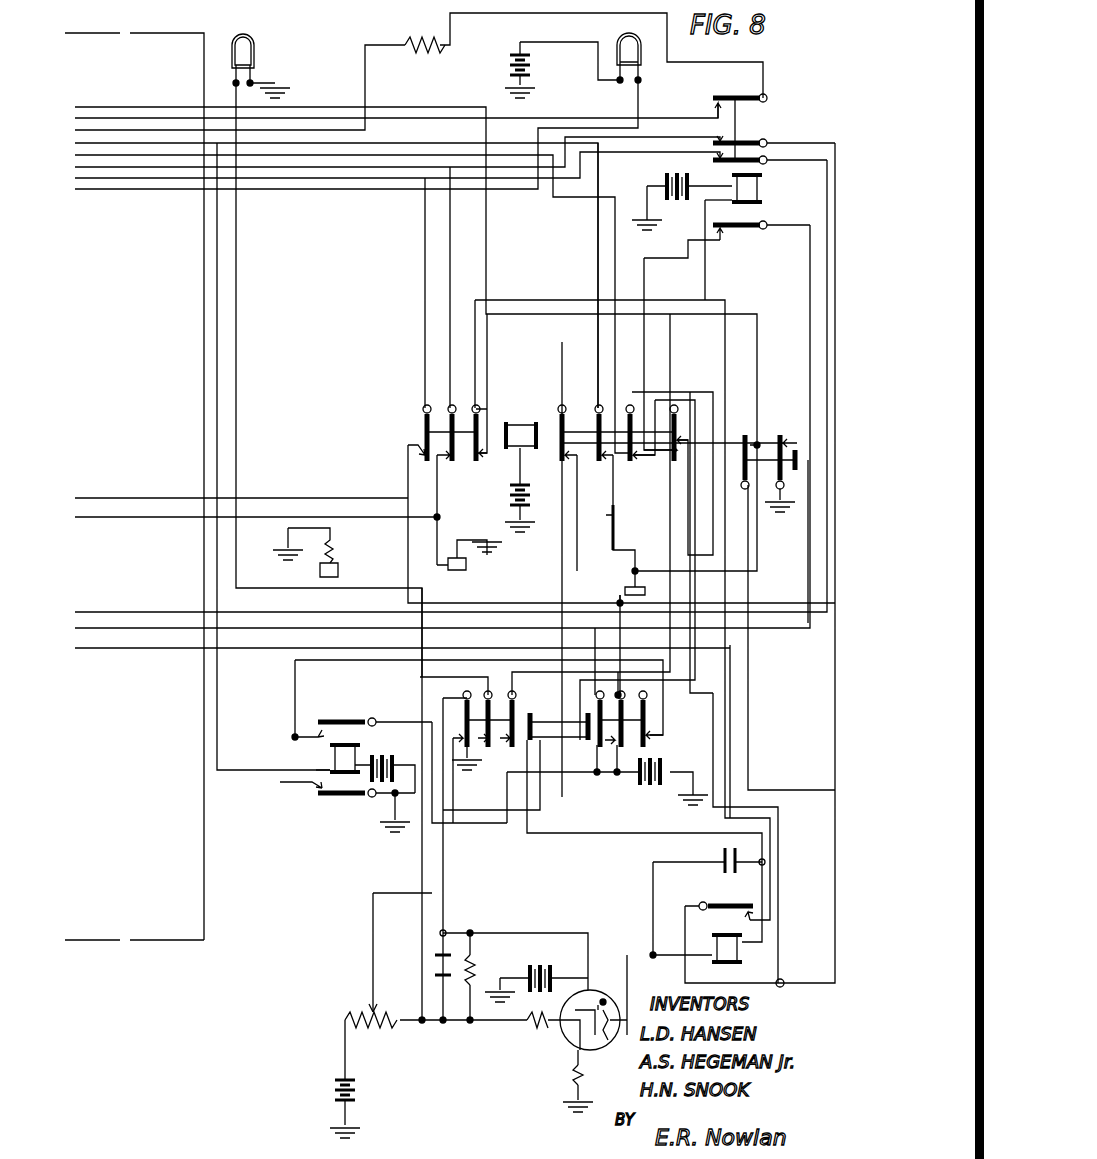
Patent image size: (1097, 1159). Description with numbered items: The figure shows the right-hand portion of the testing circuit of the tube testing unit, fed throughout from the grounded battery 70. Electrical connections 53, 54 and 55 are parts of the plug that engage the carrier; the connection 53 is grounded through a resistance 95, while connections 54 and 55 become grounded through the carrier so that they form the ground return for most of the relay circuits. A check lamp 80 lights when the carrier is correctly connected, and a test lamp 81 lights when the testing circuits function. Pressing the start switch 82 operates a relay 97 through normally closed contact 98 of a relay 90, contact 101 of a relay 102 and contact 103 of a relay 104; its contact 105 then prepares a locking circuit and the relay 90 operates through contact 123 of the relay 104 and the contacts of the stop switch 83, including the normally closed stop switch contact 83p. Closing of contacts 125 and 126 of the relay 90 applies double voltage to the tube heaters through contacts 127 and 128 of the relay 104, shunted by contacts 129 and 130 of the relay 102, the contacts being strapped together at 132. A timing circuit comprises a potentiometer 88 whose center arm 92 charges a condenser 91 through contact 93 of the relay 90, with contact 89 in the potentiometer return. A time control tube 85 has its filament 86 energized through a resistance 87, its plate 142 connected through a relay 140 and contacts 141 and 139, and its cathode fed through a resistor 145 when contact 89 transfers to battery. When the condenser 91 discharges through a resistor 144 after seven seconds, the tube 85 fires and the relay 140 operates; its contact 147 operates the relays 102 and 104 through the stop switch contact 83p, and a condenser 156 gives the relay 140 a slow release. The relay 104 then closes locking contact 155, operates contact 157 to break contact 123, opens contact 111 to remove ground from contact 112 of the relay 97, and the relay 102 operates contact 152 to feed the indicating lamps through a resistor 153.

The test lamp 81 is at (252, 42).
The resistor 153 is at (420, 38).
The check lamp 80 is at (615, 32).
The grounded battery 70 is at (362, 1100).
The contact of relay 102 152 is at (712, 98).
The contact of relay 102 129 is at (716, 132).
The contact of relay 102 130 is at (712, 155).
The relay 102 is at (762, 190).
The normally closed contact of relay 102 101 is at (722, 240).
The contact of relay 104 128 is at (415, 441).
The contact of relay 104 127 is at (445, 465).
The contact of relay 104 155 is at (482, 458).
The relay 104 is at (520, 433).
The contact of relay 104 141 is at (570, 465).
The contact of relay 104 111 is at (605, 465).
The normally closed contact of relay 104 103 is at (640, 465).
The contact of relay 104 123 is at (668, 432).
The contact of relay 104 157 is at (672, 455).
The normally closed contact of stop switch 83p is at (745, 430).
The stop switch 83 is at (786, 430).
The start switch 82 is at (625, 515).
The electrical connection 54 is at (445, 515).
The resistance 95 is at (330, 548).
The electrical connection 53 is at (338, 570).
The electrical connection 55 is at (624, 590).
The contact of relay 97 105 is at (315, 712).
The relay 97 is at (330, 768).
The contact of relay 97 112 is at (310, 798).
The normally closed contact of relay 90 93 is at (465, 712).
The normally closed contact of relay 90 89 is at (490, 750).
The contact of relay 90 139 is at (515, 720).
The relay 90 is at (558, 740).
The strap 132 is at (610, 680).
The contact of relay 90 126 is at (595, 775).
The contact of relay 90 125 is at (620, 775).
The normally closed contact of relay 90 98 is at (660, 740).
The condenser 156 is at (722, 855).
The contact of relay 140 147 is at (740, 912).
The relay 140 is at (740, 950).
The center arm of potentiometer 92 is at (380, 1000).
The potentiometer 88 is at (395, 1025).
The condenser 91 is at (455, 965).
The resistor 144 is at (475, 962).
The resistor 145 is at (545, 1005).
The filament 86 is at (565, 1040).
The tube 85 is at (578, 1040).
The plate 142 is at (618, 1038).
The resistance 87 is at (572, 1085).